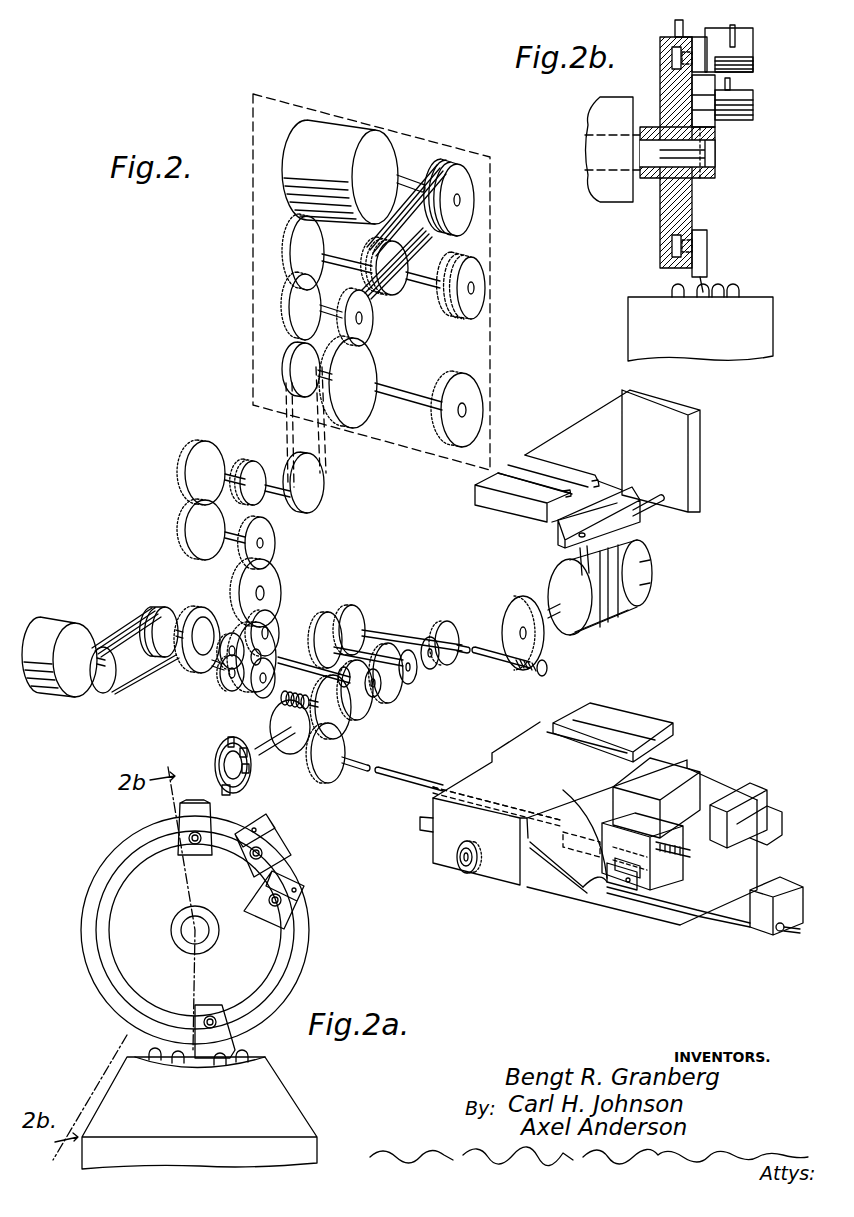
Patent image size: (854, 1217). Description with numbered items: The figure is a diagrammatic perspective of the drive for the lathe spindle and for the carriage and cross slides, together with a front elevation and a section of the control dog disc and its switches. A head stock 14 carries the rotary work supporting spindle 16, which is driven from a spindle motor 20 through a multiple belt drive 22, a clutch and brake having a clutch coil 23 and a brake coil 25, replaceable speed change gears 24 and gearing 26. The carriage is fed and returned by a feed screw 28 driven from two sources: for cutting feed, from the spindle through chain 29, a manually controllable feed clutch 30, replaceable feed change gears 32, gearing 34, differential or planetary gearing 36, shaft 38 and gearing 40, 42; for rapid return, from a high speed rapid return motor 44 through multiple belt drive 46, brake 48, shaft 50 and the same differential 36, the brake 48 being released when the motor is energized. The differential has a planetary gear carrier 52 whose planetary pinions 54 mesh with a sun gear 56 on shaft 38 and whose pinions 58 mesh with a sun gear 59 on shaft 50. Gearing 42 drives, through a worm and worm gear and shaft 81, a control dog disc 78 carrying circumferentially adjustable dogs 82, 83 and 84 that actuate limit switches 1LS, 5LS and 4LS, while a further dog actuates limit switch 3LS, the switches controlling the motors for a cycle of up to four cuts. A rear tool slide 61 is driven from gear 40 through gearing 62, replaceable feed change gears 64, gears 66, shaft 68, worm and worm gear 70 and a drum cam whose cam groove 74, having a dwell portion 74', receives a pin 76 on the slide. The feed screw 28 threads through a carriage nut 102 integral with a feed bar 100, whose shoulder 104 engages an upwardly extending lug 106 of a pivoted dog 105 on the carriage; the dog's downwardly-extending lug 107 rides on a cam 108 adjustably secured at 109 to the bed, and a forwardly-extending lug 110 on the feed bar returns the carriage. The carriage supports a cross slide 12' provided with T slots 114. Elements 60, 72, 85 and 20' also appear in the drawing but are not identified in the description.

In FIG. 2, the head stock 14 is at (490, 190).
In FIG. 2, the rotary work supporting spindle 16 is at (472, 392).
In FIG. 2, the spindle motor 20 is at (353, 158).
In FIG. 2, the multiple belt drive 22 is at (388, 234).
In FIG. 2, the clutch coil 23 is at (460, 245).
In FIG. 2, the replaceable speed change gears 24 is at (300, 262).
In FIG. 2, the brake coil 25 is at (478, 273).
In FIG. 2, the gearing 26 is at (362, 326).
In FIG. 2, the feed screw 28 is at (430, 787).
In FIG. 2, the chain 29 is at (325, 458).
In FIG. 2, the manually controllable feed clutch 30 is at (252, 467).
In FIG. 2, the replaceable feed change gears 32 is at (197, 517).
In FIG. 2, the gearing 34 is at (270, 572).
In FIG. 2, the differential or planetary gearing 36 is at (296, 647).
In FIG. 2, the shaft 38 is at (300, 673).
In FIG. 2, the gearing 40 is at (370, 683).
In FIG. 2, the gearing 42 is at (345, 730).
In FIG. 2, the high speed rapid return motor 44 is at (62, 636).
In FIG. 2, the multiple belt drive 46 is at (152, 624).
In FIG. 2, the brake 48 is at (203, 618).
In FIG. 2, the shaft 50 is at (188, 670).
In FIG. 2, the planetary gear carrier 52 is at (290, 614).
In FIG. 2, the planetary pinions 54 is at (244, 690).
In FIG. 2, the sun gear 56 is at (262, 657).
In FIG. 2, the pinions 58 is at (236, 633).
In FIG. 2, the sun gear 59 is at (208, 645).
In FIG. 2, the spring 60 is at (281, 712).
In FIG. 2, the rear tool slide 61 is at (590, 407).
In FIG. 2, the gearing 62 is at (400, 673).
In FIG. 2, the replaceable feed change gears 64 is at (353, 620).
In FIG. 2, the gears 66 is at (440, 630).
In FIG. 2, the shaft 68 is at (490, 655).
In FIG. 2, the worm and worm gear 70 is at (540, 645).
In FIG. 2, the worm wheel motor face 72 is at (595, 620).
In FIG. 2, the cam groove 74 is at (624, 584).
In FIG. 2, the dwell portion 74' is at (617, 628).
In FIG. 2, the pin 76 is at (575, 566).
In FIG. 2, the control dog disc 78 is at (226, 735).
In FIG. 2A, the control dog disc 78 is at (120, 920).
In FIG. 2B, the control dog disc 78 is at (670, 225).
In FIG. 2, the shaft 81 is at (268, 733).
In FIG. 2A, the shaft 81 is at (203, 936).
In FIG. 2B, the shaft 81 is at (710, 153).
In FIG. 2, the dog 82 is at (232, 792).
In FIG. 2A, the dog 82 is at (232, 1010).
In FIG. 2B, the dog 82 is at (705, 245).
In FIG. 2, the dog 83 is at (250, 770).
In FIG. 2A, the dog 83 is at (305, 873).
In FIG. 2B, the dog 83 is at (740, 95).
In FIG. 2, the dog 84 is at (248, 755).
In FIG. 2A, the dog 84 is at (270, 830).
In FIG. 2B, the dog 84 is at (737, 30).
In FIG. 2, the cam block 85 is at (230, 736).
In FIG. 2A, the cam block 85 is at (180, 818).
In FIG. 2B, the cam block 85 is at (675, 25).
In FIG. 2, the feed bar 100 is at (640, 866).
In FIG. 2, the carriage nut 102 is at (620, 827).
In FIG. 2, the shoulder 104 is at (563, 790).
In FIG. 2, the pivoted dog 105 is at (607, 882).
In FIG. 2, the upwardly extending lug 106 is at (583, 887).
In FIG. 2, the downwardly-extending lug 107 is at (605, 890).
In FIG. 2, the cam 108 is at (673, 907).
In FIG. 2, the adjustable securing point 109 is at (760, 923).
In FIG. 2, the forwardly-extending lug 110 is at (433, 838).
In FIG. 2, the T slots 114 is at (567, 738).
In FIG. 2, the cross slide 12' is at (617, 728).
In FIG. 2, the block 20' is at (746, 803).
In FIG. 2A, the limit switch 1LS is at (218, 1068).
In FIG. 2B, the limit switch 1LS is at (703, 300).
In FIG. 2A, the limit switch 3LS is at (177, 1066).
In FIG. 2B, the limit switch 3LS is at (678, 300).
In FIG. 2A, the limit switch 4LS is at (153, 1063).
In FIG. 2B, the limit switch 4LS is at (738, 292).
In FIG. 2A, the limit switch 5LS is at (242, 1065).
In FIG. 2B, the limit switch 5LS is at (720, 290).